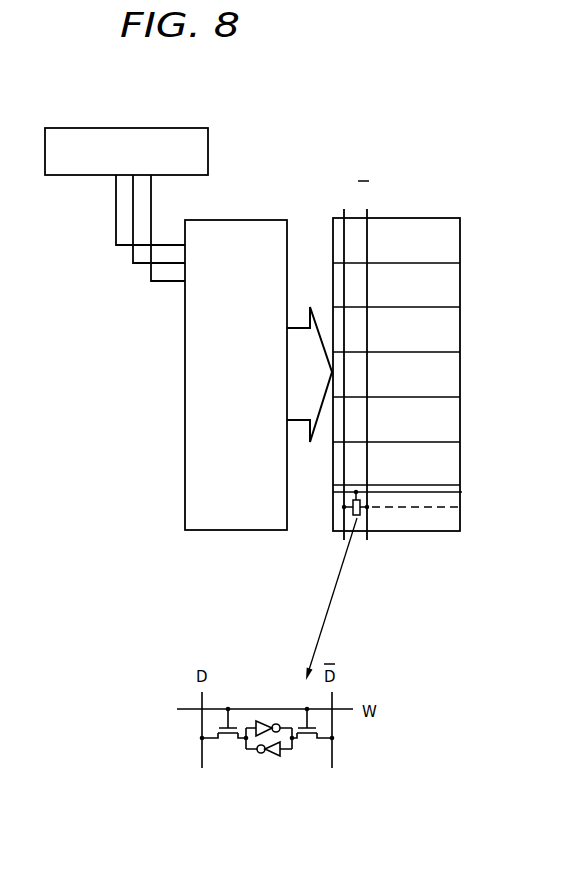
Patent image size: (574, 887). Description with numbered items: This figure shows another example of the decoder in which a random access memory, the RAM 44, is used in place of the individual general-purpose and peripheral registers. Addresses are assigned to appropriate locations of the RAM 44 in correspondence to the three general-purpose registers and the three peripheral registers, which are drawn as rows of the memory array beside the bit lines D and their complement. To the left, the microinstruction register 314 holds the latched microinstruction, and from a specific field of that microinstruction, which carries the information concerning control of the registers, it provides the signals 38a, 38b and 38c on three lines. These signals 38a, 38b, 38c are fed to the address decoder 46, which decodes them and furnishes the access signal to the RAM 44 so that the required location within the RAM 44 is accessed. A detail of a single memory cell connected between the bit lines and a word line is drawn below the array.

The microinstruction register 314 is at (208, 162).
The signal 38a is at (116, 203).
The signal 38b is at (133, 228).
The signal 38c is at (151, 273).
The address decoder 46 is at (232, 531).
The RAM 44 is at (392, 531).